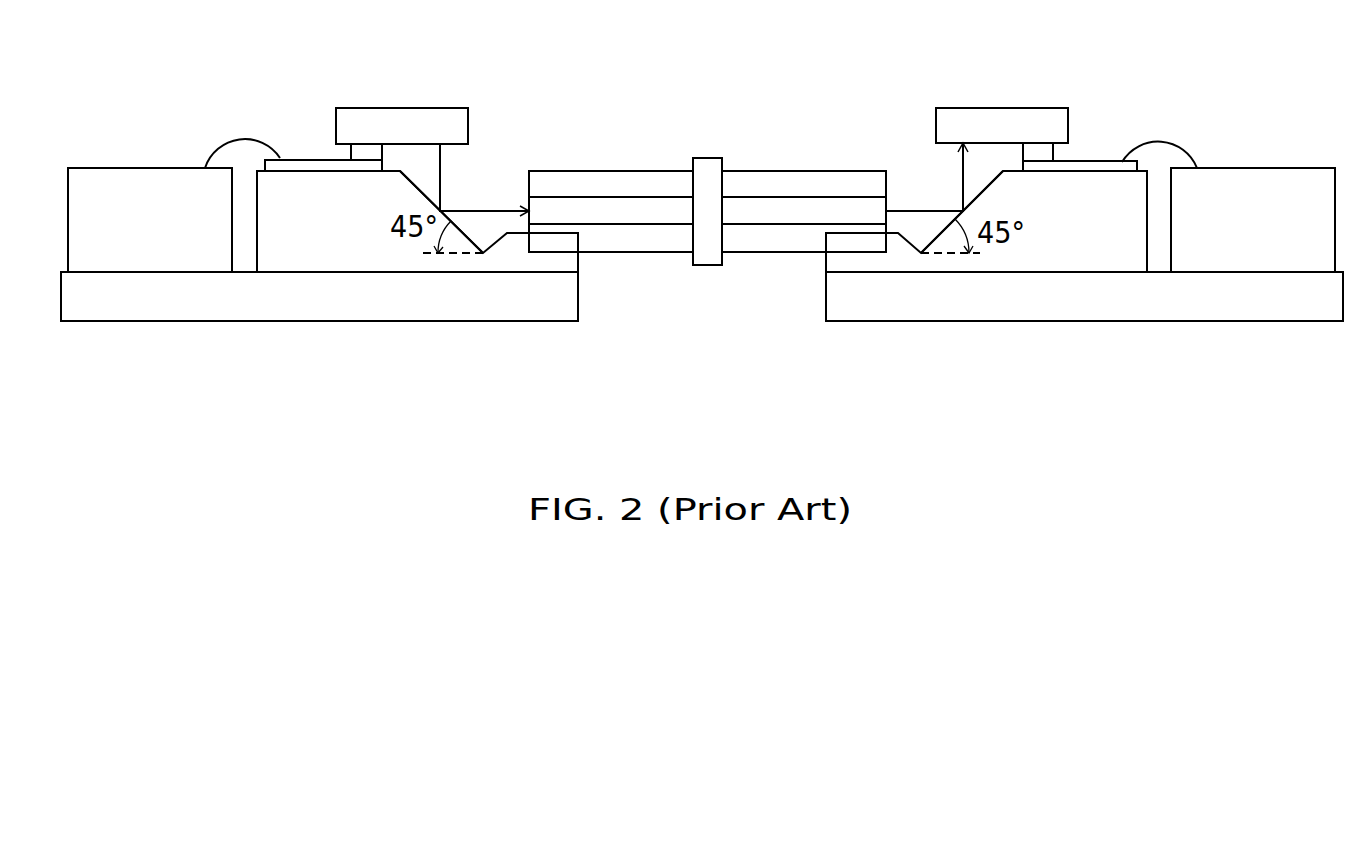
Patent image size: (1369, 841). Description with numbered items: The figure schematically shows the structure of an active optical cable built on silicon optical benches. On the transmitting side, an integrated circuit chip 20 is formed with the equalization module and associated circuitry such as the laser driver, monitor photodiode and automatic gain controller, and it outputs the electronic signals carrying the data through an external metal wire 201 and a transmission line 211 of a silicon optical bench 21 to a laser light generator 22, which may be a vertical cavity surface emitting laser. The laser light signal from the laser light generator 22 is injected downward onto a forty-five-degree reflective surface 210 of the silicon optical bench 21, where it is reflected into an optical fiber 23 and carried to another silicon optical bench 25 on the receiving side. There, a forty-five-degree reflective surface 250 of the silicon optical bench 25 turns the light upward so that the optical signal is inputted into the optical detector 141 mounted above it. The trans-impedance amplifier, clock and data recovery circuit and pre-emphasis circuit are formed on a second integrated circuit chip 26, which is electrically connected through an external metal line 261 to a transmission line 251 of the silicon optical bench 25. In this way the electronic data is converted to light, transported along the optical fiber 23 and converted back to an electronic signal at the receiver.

The integrated circuit chip 20 is at (150, 182).
The external metal wire 201 is at (236, 142).
The silicon optical bench 21 is at (353, 262).
The 45-degree reflective surface 210 is at (422, 188).
The transmission line 211 is at (298, 166).
The laser light generator 22 is at (397, 116).
The optical fiber 23 is at (617, 185).
The silicon optical bench 25 is at (1086, 181).
The 45-degree reflective surface 250 is at (933, 241).
The transmission line 251 is at (1114, 163).
The optical detector 141 is at (1004, 117).
The external metal line 261 is at (1172, 140).
The integrated circuit chip 26 is at (1252, 180).